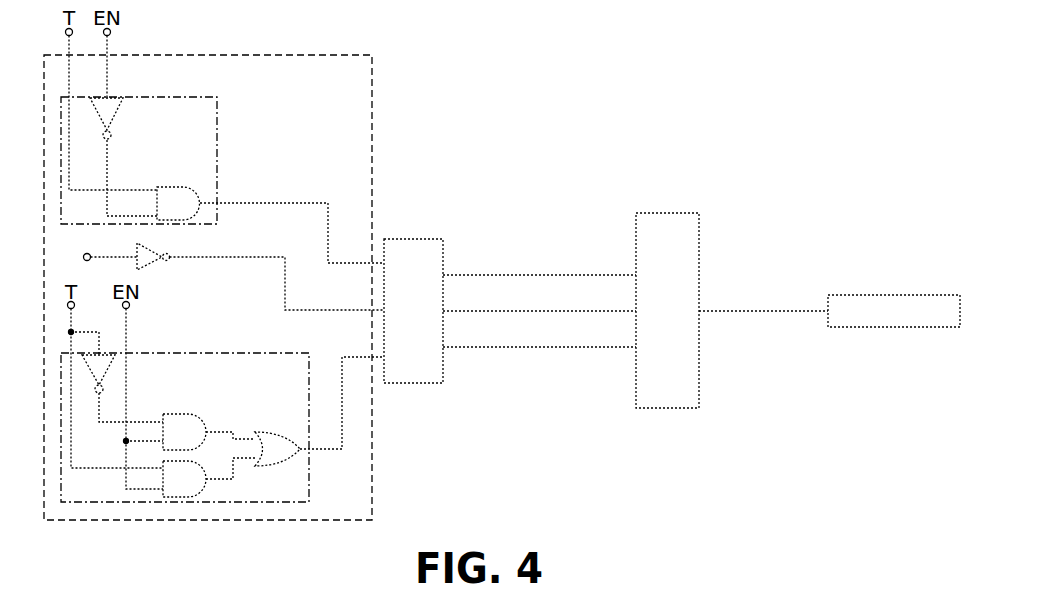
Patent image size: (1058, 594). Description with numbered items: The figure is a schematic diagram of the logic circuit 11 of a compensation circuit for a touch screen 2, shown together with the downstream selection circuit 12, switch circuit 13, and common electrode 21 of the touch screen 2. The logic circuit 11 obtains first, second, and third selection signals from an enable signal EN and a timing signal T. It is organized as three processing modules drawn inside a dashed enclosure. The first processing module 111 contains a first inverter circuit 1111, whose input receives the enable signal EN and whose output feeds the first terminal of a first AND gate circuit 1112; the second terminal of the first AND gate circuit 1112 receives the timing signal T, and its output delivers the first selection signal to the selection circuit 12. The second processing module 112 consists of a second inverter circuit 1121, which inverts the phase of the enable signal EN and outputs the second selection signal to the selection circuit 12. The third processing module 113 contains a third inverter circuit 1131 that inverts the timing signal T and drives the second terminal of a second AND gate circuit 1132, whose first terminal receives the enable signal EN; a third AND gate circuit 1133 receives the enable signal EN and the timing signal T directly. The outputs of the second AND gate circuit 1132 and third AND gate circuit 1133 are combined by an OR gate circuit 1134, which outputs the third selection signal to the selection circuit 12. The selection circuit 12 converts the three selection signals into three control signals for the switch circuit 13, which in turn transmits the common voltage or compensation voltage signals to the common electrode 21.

The logic circuit 11 is at (353, 123).
The first processing module 111 is at (177, 149).
The first inverter circuit 1111 is at (105, 108).
The first AND gate circuit 1112 is at (182, 195).
The second processing module 112 is at (218, 276).
The second inverter circuit 1121 is at (155, 262).
The third processing module 113 is at (211, 425).
The third inverter circuit 1131 is at (102, 362).
The second AND gate circuit 1132 is at (182, 423).
The third AND gate circuit 1133 is at (185, 487).
The OR gate circuit 1134 is at (275, 457).
The selection circuit 12 is at (415, 253).
The switch circuit 13 is at (665, 237).
The common electrode 21 is at (872, 302).
The touch screen 2 is at (894, 291).